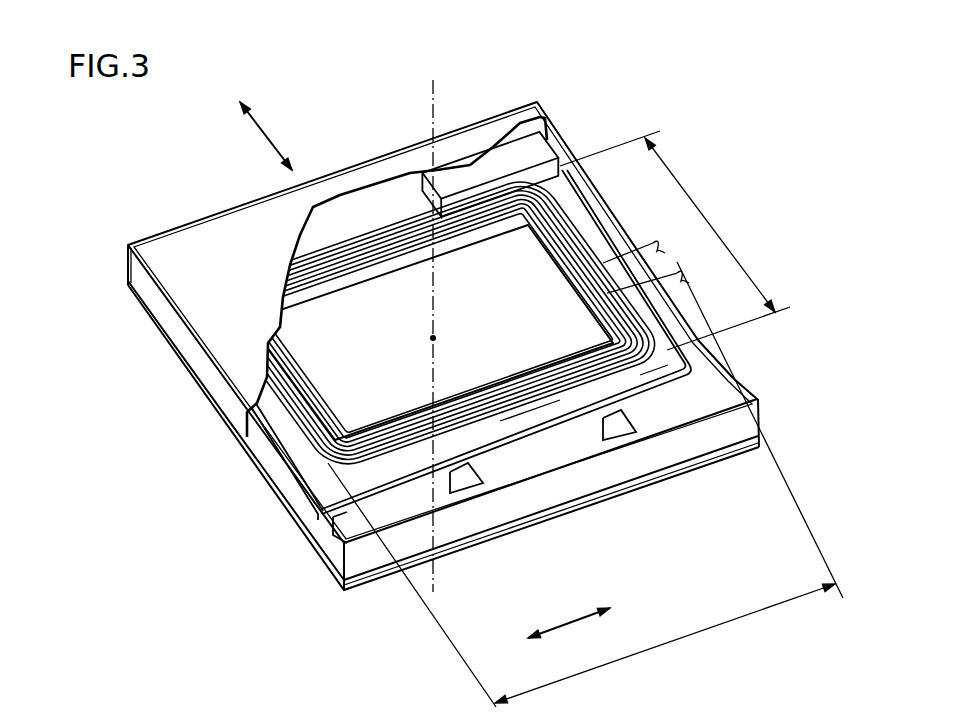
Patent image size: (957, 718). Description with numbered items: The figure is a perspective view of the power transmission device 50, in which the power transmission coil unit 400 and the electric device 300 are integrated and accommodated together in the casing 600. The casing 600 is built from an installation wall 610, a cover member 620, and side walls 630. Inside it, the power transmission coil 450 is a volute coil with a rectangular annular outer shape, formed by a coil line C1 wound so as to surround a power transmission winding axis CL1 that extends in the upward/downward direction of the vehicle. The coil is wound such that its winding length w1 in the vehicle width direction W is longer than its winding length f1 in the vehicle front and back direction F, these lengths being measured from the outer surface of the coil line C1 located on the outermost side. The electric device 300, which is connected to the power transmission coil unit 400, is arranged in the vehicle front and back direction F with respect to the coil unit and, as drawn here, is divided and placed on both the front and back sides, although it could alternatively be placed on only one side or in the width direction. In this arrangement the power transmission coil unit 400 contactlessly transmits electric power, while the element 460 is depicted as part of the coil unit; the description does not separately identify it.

The power transmission device 50 is at (679, 522).
The electric device 300 is at (532, 152).
The power transmission coil unit 400 is at (638, 563).
The power transmission coil 450 is at (667, 408).
The coil inner portion 460 is at (527, 412).
The casing 600 is at (193, 292).
The installation wall 610 is at (493, 537).
The cover member 620 is at (367, 177).
The side walls 630 is at (247, 204).
The power transmission winding axis CL1 is at (436, 88).
The coil line C1 is at (643, 243).
The winding length in the vehicle front and back direction f1 is at (675, 240).
The winding length in the vehicle width direction w1 is at (585, 484).
The vehicle front and back direction F is at (266, 136).
The vehicle width direction W is at (569, 632).